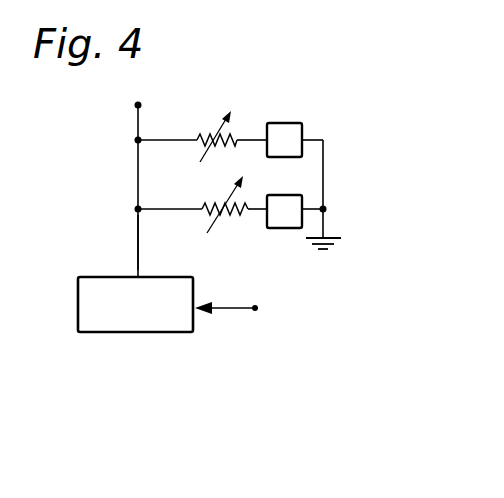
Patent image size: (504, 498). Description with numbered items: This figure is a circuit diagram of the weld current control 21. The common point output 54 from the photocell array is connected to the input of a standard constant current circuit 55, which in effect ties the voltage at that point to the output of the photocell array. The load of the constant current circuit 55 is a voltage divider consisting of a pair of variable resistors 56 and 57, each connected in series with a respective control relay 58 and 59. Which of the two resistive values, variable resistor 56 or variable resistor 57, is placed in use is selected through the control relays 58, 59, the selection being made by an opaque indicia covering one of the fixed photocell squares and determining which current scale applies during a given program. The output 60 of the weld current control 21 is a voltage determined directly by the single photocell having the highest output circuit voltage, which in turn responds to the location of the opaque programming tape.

The weld current control 21 is at (120, 224).
The common point output 54 is at (253, 304).
The constant current circuit 55 is at (128, 333).
The variable resistor 56 is at (228, 134).
The variable resistor 57 is at (214, 200).
The control relay 58 is at (302, 124).
The control relay 59 is at (306, 174).
The output 60 is at (136, 117).